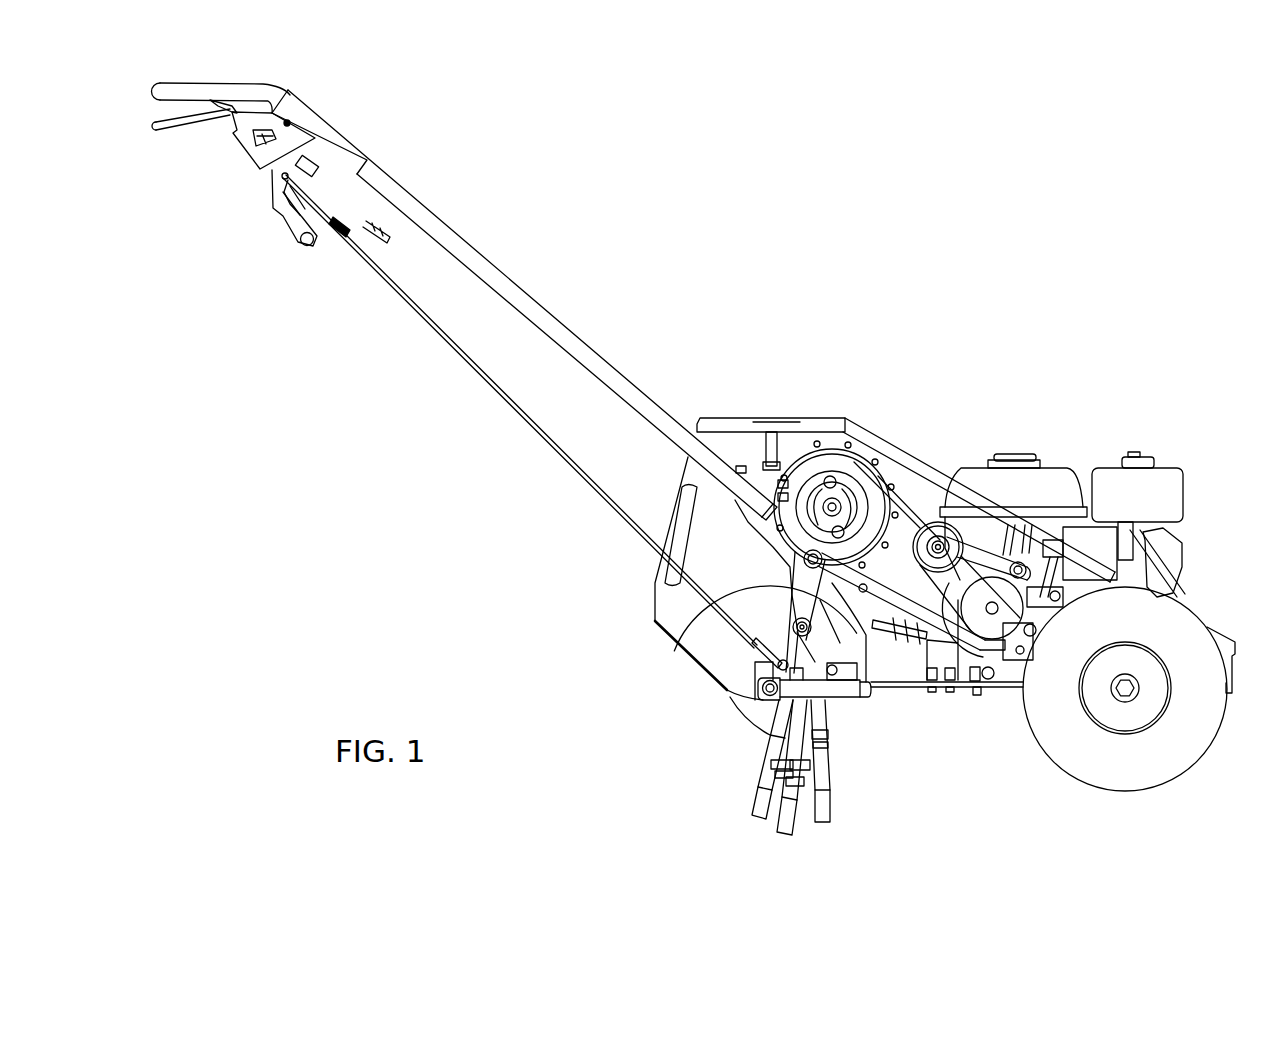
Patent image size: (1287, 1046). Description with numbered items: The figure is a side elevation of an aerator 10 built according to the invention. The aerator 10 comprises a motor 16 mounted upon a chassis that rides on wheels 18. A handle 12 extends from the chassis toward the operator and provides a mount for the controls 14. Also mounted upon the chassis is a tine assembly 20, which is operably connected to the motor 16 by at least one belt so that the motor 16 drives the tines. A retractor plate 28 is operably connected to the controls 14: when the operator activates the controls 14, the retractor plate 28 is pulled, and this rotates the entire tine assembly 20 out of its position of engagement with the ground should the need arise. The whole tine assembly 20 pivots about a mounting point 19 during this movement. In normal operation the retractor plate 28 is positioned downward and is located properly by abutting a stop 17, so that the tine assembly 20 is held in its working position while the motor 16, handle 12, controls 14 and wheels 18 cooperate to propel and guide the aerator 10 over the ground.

The aerator 10 is at (478, 603).
The handle 12 is at (538, 328).
The controls 14 is at (273, 207).
The motor 16 is at (1022, 490).
The stop 17 is at (888, 690).
The wheels 18 is at (690, 712).
The mounting point 19 is at (768, 497).
The tine assembly 20 is at (802, 443).
The retractor plate 28 is at (832, 690).